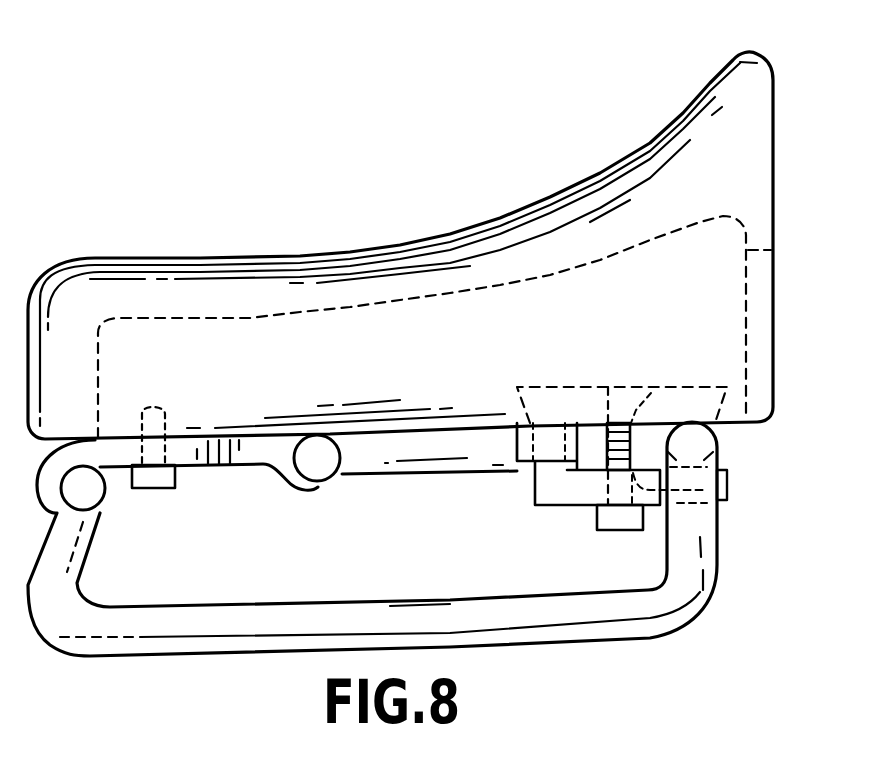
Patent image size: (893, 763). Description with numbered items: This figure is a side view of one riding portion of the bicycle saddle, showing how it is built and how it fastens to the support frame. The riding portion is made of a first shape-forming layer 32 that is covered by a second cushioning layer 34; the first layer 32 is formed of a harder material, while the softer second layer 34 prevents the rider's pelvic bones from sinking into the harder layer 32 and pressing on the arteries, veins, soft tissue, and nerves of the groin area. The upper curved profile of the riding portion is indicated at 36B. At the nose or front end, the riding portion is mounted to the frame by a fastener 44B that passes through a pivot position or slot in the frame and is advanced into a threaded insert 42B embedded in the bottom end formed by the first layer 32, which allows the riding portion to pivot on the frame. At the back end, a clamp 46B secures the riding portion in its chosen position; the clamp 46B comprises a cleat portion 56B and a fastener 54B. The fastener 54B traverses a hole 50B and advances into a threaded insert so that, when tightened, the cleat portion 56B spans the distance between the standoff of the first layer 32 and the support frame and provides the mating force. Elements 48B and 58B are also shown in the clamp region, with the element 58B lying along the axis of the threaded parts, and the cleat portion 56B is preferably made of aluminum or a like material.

The first shape-forming layer 32 is at (773, 250).
The second cushioning layer 34 is at (77, 297).
The curved top surface 36B is at (684, 118).
The threaded insert 42B is at (174, 414).
The fastener 44B is at (150, 491).
The clamp 46B is at (575, 520).
The threaded member 48B is at (656, 383).
The hole 50B is at (731, 483).
The fastener 54B is at (619, 531).
The cleat portion 56B is at (534, 502).
The screw 58B is at (557, 380).